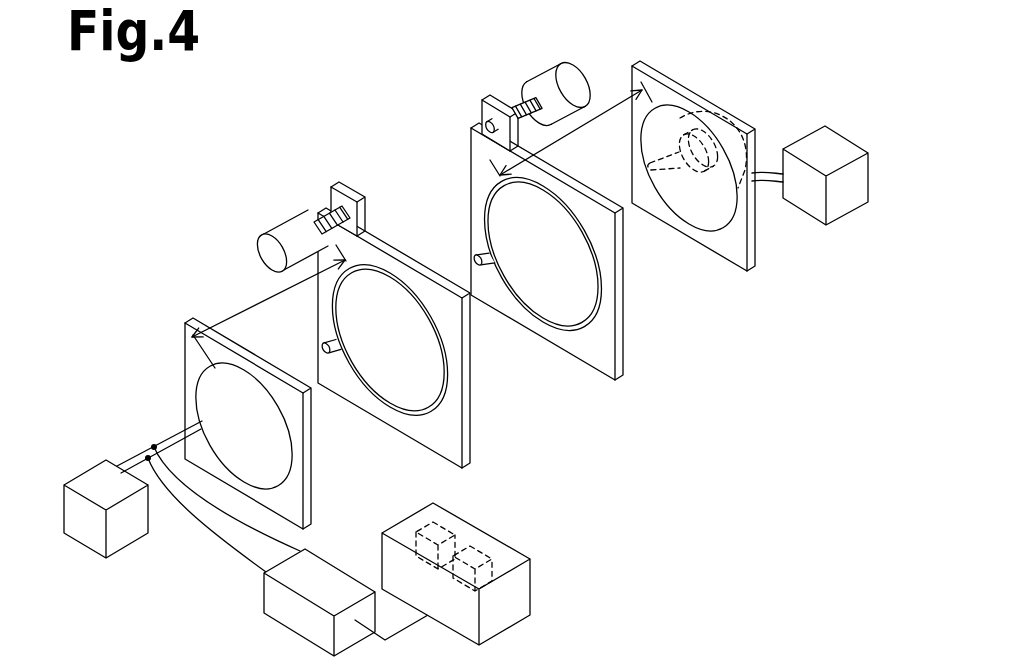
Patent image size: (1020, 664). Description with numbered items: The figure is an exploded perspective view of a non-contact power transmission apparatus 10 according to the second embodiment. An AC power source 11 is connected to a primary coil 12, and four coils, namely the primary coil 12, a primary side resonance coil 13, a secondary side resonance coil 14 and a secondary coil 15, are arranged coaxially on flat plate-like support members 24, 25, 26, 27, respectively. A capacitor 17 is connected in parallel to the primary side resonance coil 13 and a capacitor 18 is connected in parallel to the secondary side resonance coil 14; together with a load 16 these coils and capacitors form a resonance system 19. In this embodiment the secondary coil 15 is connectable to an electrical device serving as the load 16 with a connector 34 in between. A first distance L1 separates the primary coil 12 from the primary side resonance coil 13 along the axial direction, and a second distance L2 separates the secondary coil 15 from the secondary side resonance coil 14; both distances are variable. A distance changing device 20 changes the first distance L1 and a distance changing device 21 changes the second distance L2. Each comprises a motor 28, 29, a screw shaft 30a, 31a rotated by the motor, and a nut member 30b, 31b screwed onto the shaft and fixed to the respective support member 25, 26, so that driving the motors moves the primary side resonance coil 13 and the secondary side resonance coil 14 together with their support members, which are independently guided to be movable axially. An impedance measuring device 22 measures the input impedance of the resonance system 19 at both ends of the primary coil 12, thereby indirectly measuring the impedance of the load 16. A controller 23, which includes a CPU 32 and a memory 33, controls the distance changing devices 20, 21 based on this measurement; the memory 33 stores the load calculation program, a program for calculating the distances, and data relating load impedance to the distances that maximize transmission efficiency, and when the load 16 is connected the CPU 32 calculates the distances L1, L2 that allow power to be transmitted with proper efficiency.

The non-contact power transmission apparatus 10 is at (466, 332).
The AC power source 11 is at (130, 533).
The primary coil 12 is at (200, 373).
The primary side resonance coil 13 is at (383, 410).
The secondary side resonance coil 14 is at (563, 327).
The secondary coil 15 is at (677, 220).
The load 16 is at (815, 208).
The capacitor 17 is at (323, 347).
The capacitor 18 is at (475, 258).
The resonance system 19 is at (684, 166).
The distance changing device 20 is at (318, 199).
The distance changing device 21 is at (501, 79).
The impedance measuring device 22 is at (293, 620).
The controller 23 is at (456, 577).
The support member 24 is at (308, 500).
The support member 25 is at (467, 436).
The support member 26 is at (623, 340).
The support member 27 is at (731, 252).
The motor 28 is at (277, 226).
The motor 29 is at (563, 72).
The screw shaft 30a is at (322, 212).
The nut member 30b is at (345, 183).
The screw shaft 31a is at (528, 97).
The nut member 31b is at (492, 97).
The CPU 32 is at (460, 517).
The memory 33 is at (493, 542).
The connector 34 is at (705, 107).
The first distance L1 is at (258, 303).
The second distance L2 is at (588, 123).